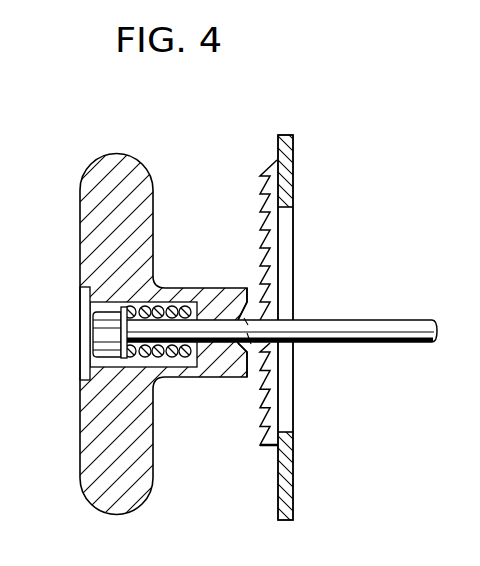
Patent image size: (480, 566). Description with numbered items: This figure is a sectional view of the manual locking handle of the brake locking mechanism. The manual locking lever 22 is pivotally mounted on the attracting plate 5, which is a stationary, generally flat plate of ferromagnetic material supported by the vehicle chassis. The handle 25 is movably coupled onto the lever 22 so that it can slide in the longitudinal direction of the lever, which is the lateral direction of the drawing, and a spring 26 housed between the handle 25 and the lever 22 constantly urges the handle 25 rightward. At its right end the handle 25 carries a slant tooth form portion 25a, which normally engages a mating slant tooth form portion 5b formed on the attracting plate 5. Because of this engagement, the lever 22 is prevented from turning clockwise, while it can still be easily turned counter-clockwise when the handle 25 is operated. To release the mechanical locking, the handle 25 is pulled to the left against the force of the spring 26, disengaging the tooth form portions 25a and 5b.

The handle 25 is at (80, 226).
The slant tooth form portion 25a is at (252, 292).
The spring 26 is at (171, 357).
The manual locking lever 22 is at (349, 320).
The attracting plate 5 is at (288, 483).
The slant tooth form portion 5b is at (262, 428).